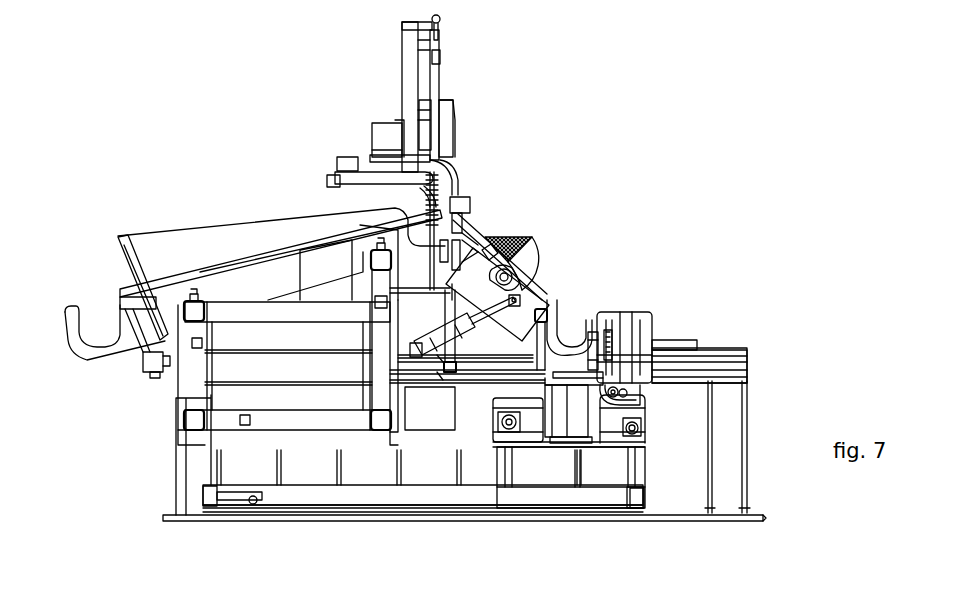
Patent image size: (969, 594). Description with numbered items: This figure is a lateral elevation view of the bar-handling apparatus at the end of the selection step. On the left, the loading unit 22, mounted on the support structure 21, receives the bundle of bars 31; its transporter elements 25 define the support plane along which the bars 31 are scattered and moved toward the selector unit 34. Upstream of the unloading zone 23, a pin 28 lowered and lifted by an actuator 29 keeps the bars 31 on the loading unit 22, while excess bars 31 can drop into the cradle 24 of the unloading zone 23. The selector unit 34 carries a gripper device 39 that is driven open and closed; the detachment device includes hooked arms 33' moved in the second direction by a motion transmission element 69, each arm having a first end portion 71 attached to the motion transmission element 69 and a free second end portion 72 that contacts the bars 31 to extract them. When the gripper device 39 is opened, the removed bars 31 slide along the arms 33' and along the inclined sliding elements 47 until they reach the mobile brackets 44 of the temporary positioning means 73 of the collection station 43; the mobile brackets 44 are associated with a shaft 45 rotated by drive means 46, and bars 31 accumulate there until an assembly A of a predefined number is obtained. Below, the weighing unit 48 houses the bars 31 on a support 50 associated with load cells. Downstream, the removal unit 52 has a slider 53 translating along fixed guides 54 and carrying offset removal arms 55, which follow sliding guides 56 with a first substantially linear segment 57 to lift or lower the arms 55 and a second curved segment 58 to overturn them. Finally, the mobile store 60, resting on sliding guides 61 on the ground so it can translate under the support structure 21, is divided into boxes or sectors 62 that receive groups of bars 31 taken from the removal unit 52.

The support structure 21 is at (193, 458).
The loading unit 22 is at (274, 196).
The unloading zone 23 is at (58, 302).
The cradle 24 is at (88, 352).
The transporter element 25 is at (263, 252).
The pin 28 is at (125, 247).
The actuator 29 is at (150, 374).
The bar 31 is at (523, 242).
The arm 33' is at (480, 182).
The selector unit 34 is at (392, 68).
The gripper device 39 is at (456, 164).
The collection station 43 is at (562, 220).
The mobile bracket 44 is at (526, 261).
The shaft 45 is at (506, 280).
The drive means 46 is at (491, 323).
The sliding element 47 is at (473, 230).
The weighing unit 48 is at (557, 452).
The support 50 is at (527, 405).
The removal unit 52 is at (694, 338).
The slider 53 is at (663, 338).
The fixed guide 54 is at (723, 362).
The arm 55 is at (594, 372).
The sliding guide 56 is at (614, 342).
The first substantially linear segment 57 is at (598, 348).
The second curved segment 58 is at (626, 395).
The store 60 is at (337, 518).
The sliding guide 61 is at (422, 516).
The box or sector 62 is at (304, 468).
The motion transmission element 69 is at (445, 202).
The first end portion 71 is at (466, 216).
The second end portion 72 is at (421, 188).
The temporary positioning means 73 is at (550, 268).
The assembly of bars A is at (500, 234).